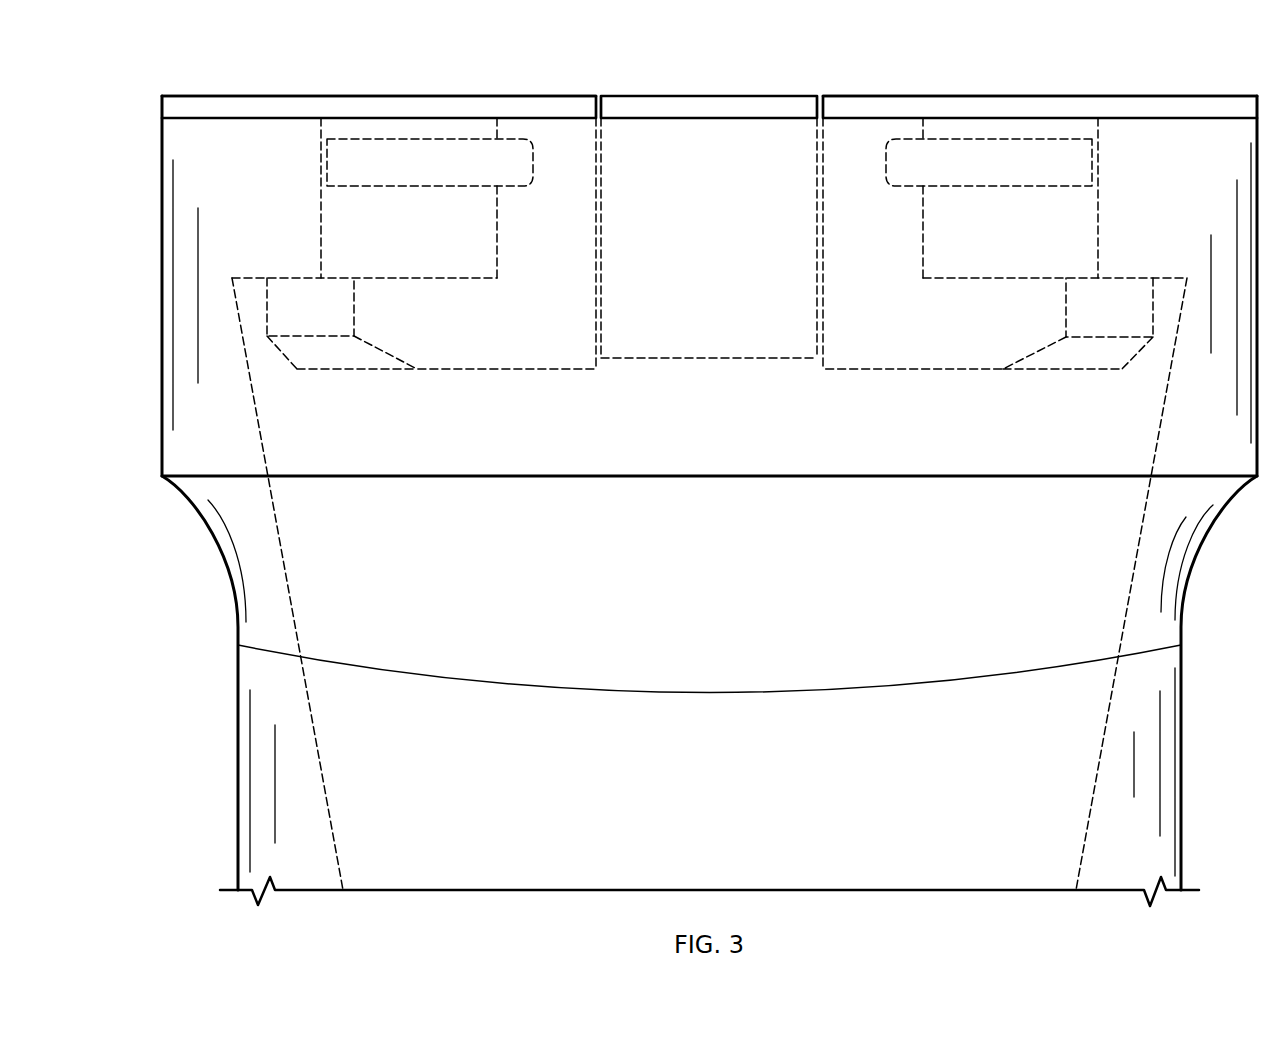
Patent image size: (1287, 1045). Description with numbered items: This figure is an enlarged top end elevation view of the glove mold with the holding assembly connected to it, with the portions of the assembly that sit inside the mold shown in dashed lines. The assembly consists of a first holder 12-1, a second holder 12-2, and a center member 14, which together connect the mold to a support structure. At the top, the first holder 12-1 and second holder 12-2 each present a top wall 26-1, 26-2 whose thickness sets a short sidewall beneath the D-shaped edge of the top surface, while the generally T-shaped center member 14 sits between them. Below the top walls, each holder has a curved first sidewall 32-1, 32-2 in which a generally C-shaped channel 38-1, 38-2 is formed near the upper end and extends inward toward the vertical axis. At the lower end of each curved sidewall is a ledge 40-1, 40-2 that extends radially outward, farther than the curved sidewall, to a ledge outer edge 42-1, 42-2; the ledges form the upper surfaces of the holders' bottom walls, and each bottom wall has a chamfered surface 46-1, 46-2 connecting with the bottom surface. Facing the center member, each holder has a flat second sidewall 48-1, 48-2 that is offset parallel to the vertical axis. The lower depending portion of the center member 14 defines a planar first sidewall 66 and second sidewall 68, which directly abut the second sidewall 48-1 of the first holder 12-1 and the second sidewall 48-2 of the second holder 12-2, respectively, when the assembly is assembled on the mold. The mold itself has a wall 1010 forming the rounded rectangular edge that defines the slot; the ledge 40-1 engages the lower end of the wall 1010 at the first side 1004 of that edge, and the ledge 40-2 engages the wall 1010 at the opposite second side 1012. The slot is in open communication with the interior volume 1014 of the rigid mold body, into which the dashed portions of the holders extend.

The first holder 12-1 is at (1040, 73).
The second holder 12-2 is at (379, 73).
The center member 14 is at (690, 91).
The top wall 26-1 is at (1136, 94).
The top wall 26-2 is at (283, 94).
The channel 38-1 is at (888, 157).
The channel 38-2 is at (532, 157).
The curved first sidewall 32-1 is at (1098, 207).
The curved first sidewall 32-2 is at (321, 207).
The ledge outer edge 42-1 is at (1153, 305).
The ledge outer edge 42-2 is at (266, 305).
The ledge 40-1 is at (1119, 275).
The ledge 40-2 is at (300, 275).
The chamfered surface 46-1 is at (1122, 355).
The chamfered surface 46-2 is at (297, 355).
The second sidewall 48-1 is at (817, 204).
The second sidewall 48-2 is at (601, 204).
The first sidewall 66 is at (823, 232).
The second sidewall 68 is at (596, 232).
The wall 1010 is at (709, 162).
The second side 1012 is at (327, 168).
The first side 1004 is at (1092, 168).
The interior volume 1014 is at (325, 764).